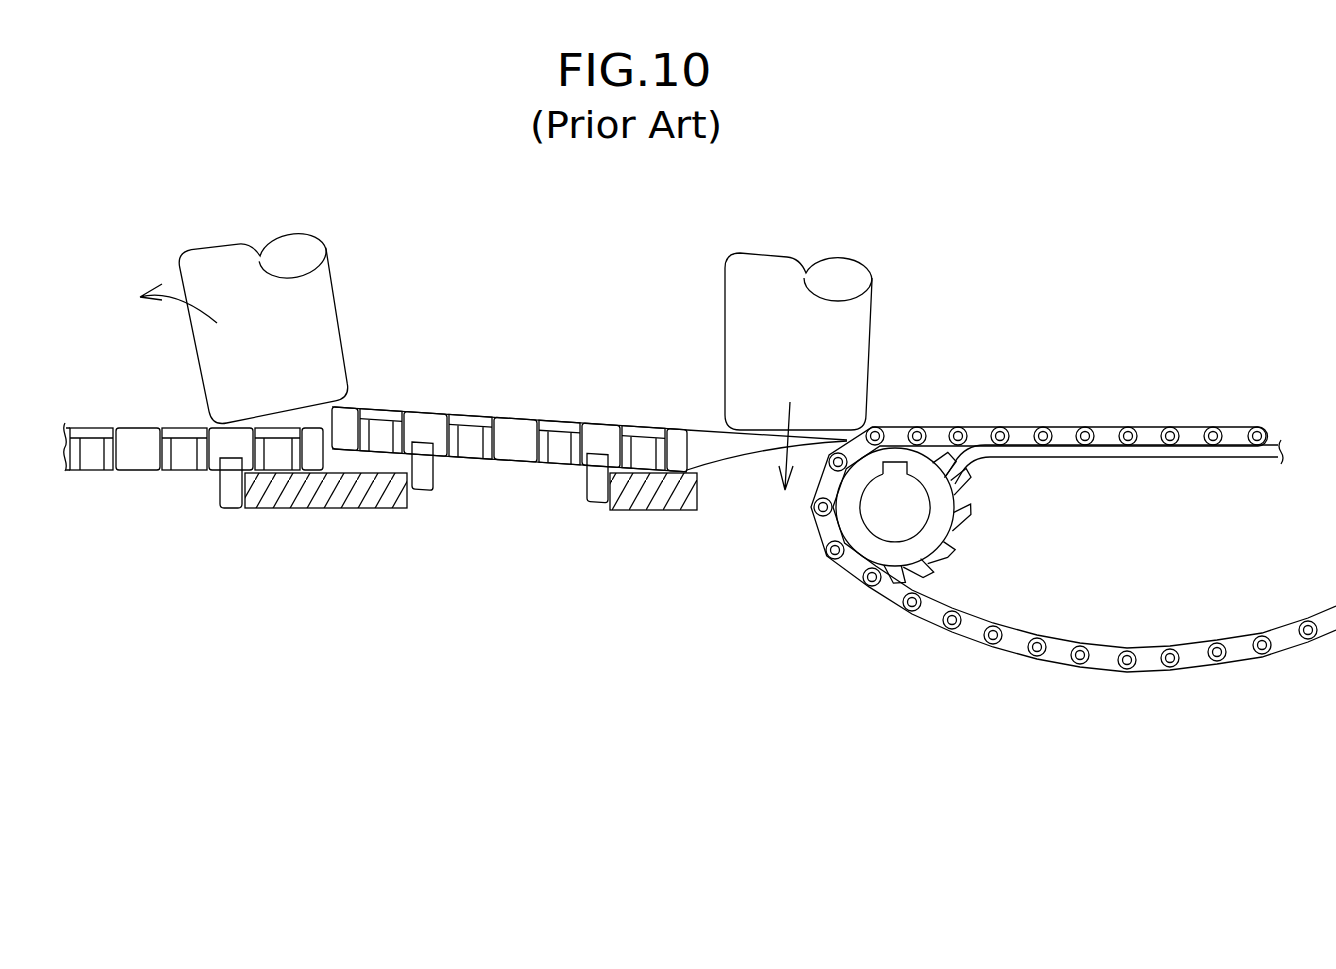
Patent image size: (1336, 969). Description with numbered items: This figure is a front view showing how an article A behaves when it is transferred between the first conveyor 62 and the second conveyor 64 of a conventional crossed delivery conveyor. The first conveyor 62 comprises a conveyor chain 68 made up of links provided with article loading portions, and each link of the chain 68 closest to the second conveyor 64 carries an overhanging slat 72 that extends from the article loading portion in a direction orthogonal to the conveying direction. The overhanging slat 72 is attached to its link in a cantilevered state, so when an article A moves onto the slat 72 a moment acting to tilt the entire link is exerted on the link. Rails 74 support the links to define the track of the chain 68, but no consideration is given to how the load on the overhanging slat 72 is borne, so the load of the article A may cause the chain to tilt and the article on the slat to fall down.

The first conveyor 62 is at (375, 403).
The conveyor chain 68 is at (561, 424).
The rail 74 is at (313, 497).
The overhanging slat 72 is at (733, 452).
The second conveyor 64 is at (1115, 389).
The article A is at (322, 292).